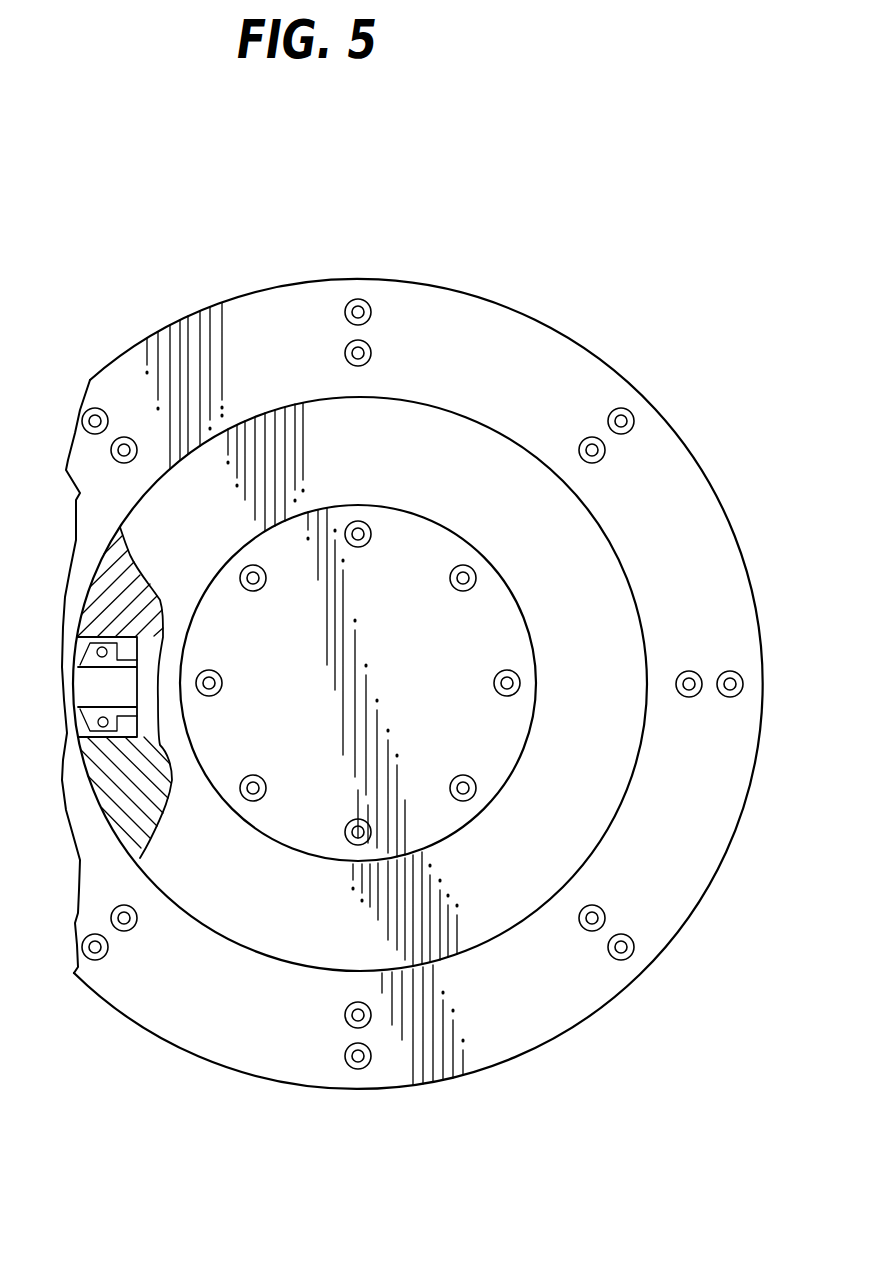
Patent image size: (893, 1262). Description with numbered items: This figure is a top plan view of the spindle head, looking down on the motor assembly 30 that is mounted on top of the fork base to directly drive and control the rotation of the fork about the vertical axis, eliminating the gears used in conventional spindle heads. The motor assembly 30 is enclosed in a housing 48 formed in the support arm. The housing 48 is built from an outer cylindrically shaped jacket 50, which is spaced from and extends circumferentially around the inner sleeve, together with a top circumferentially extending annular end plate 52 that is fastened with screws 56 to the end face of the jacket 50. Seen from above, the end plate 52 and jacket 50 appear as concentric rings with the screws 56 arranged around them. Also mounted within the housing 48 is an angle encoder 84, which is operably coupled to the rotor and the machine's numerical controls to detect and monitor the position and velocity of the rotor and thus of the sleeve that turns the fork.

The motor assembly 30 is at (588, 348).
The housing 48 is at (681, 437).
The outer cylindrically shaped jacket 50 is at (162, 330).
The top annular end plate 52 is at (286, 379).
The screws 56 is at (628, 409).
The angle encoder 84 is at (127, 648).